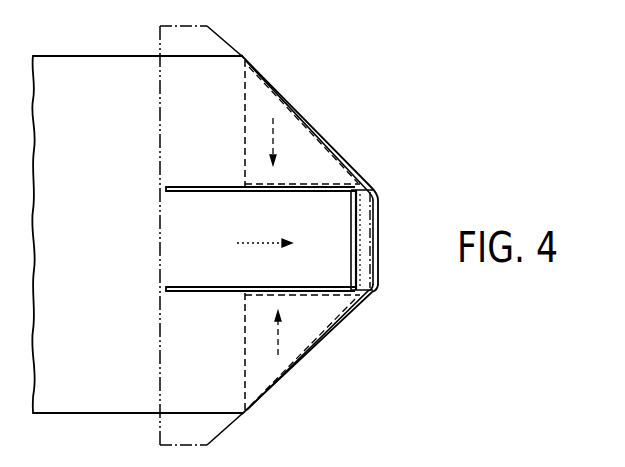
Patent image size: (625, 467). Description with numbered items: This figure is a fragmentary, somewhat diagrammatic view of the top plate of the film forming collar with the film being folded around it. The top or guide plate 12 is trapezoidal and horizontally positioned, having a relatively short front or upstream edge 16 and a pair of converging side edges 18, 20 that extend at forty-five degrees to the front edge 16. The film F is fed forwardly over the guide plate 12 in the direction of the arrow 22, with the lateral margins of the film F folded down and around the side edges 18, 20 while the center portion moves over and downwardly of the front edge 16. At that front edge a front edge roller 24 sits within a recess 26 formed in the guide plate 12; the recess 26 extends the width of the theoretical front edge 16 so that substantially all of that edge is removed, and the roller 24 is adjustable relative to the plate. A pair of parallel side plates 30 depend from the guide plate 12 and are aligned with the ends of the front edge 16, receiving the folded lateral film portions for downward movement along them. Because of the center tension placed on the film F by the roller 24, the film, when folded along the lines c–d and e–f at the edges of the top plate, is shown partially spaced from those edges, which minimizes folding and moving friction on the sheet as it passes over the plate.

The film F is at (122, 66).
The top or guide plate 12 is at (202, 44).
The front edge 16 is at (375, 222).
The side edge 18 is at (325, 338).
The side edge 20 is at (338, 157).
The arrow 22 is at (235, 236).
The front edge roller 24 is at (378, 236).
The recess 26 is at (357, 217).
The side plates 30 is at (205, 191).
The fold line point c is at (249, 48).
The fold line point d is at (382, 185).
The fold line point e is at (385, 293).
The fold line point f is at (256, 422).